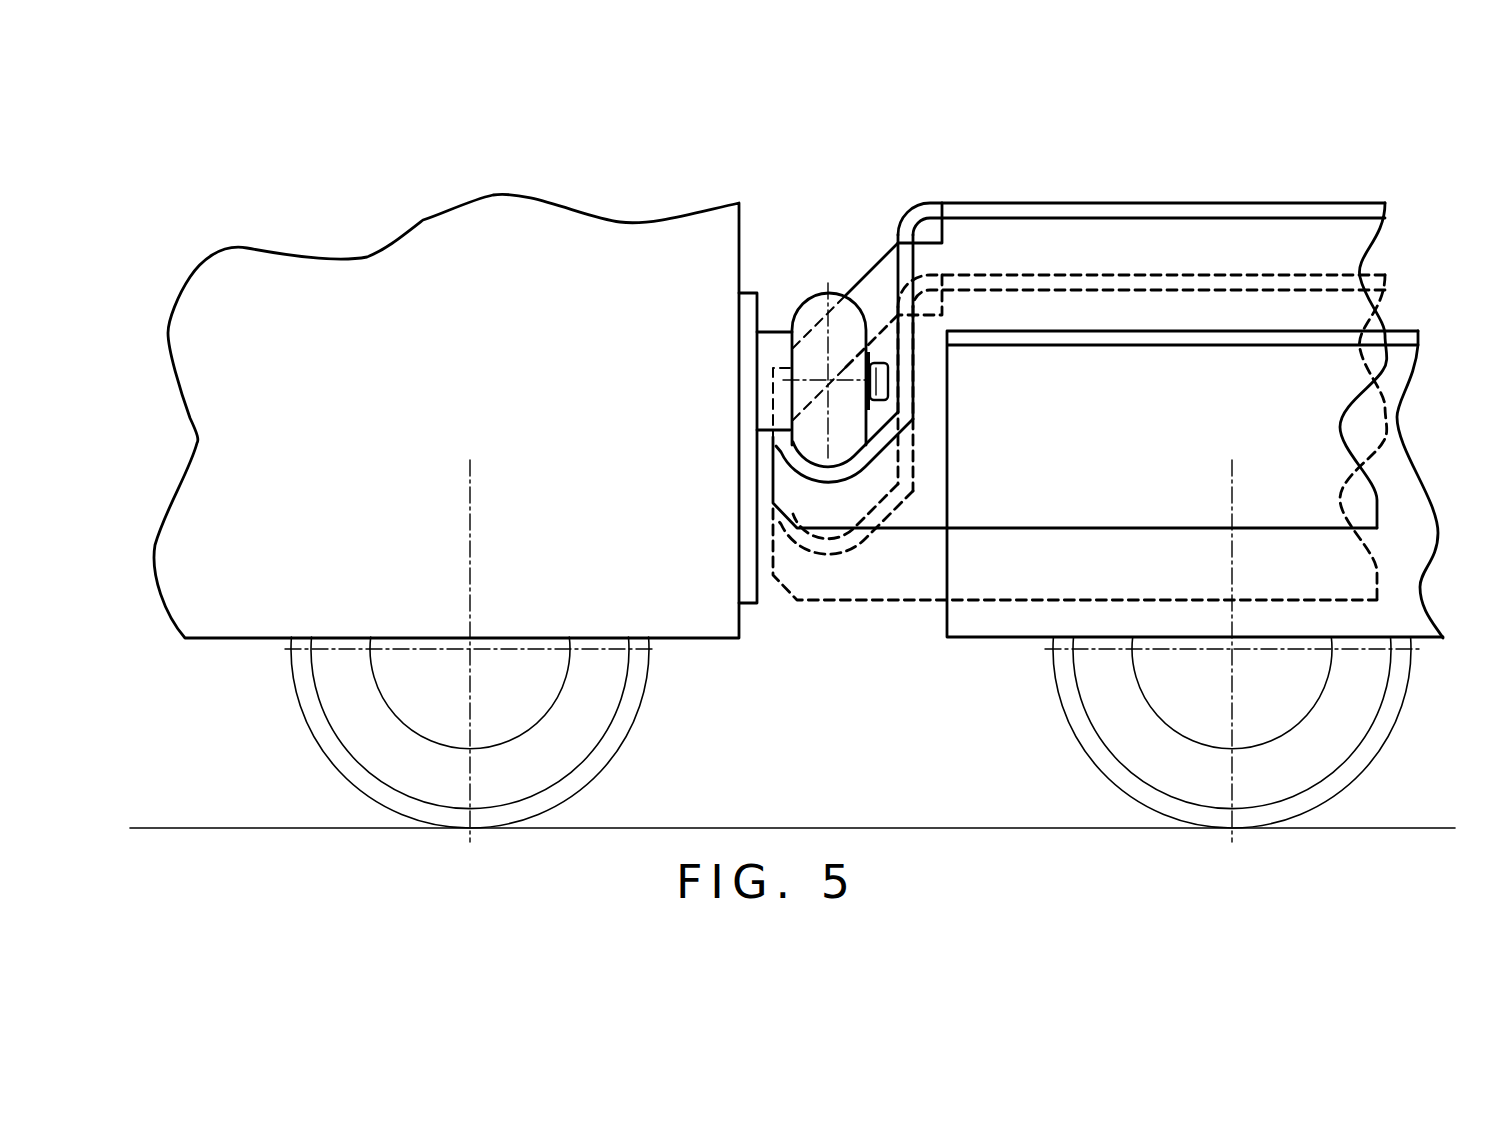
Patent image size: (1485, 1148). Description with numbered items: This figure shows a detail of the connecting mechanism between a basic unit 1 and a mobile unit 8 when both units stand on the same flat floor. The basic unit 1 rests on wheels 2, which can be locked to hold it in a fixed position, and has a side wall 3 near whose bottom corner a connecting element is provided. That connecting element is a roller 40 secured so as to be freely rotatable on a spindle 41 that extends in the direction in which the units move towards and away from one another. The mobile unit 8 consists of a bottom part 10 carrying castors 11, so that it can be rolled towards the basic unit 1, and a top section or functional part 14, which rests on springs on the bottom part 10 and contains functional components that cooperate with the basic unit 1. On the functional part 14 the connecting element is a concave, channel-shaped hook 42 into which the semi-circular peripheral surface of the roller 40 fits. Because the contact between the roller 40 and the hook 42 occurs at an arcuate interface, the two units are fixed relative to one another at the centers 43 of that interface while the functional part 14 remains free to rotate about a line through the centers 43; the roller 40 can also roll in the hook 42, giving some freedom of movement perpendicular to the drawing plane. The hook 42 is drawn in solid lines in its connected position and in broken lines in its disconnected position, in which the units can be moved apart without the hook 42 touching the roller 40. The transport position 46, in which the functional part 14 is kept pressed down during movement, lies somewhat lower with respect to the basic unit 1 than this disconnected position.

The basic unit 1 is at (390, 273).
The wheels 2 is at (343, 722).
The side wall 3 is at (740, 233).
The mobile unit 8 is at (1413, 300).
The bottom part 10 is at (1392, 470).
The castors 11 is at (1350, 723).
The top section (functional part) 14 is at (1133, 205).
The roller 40 is at (805, 312).
The spindle 41 is at (800, 378).
The concave hook 42 is at (860, 470).
The centers of the arcuate interface 43 is at (829, 440).
The transport position 46 is at (1270, 283).